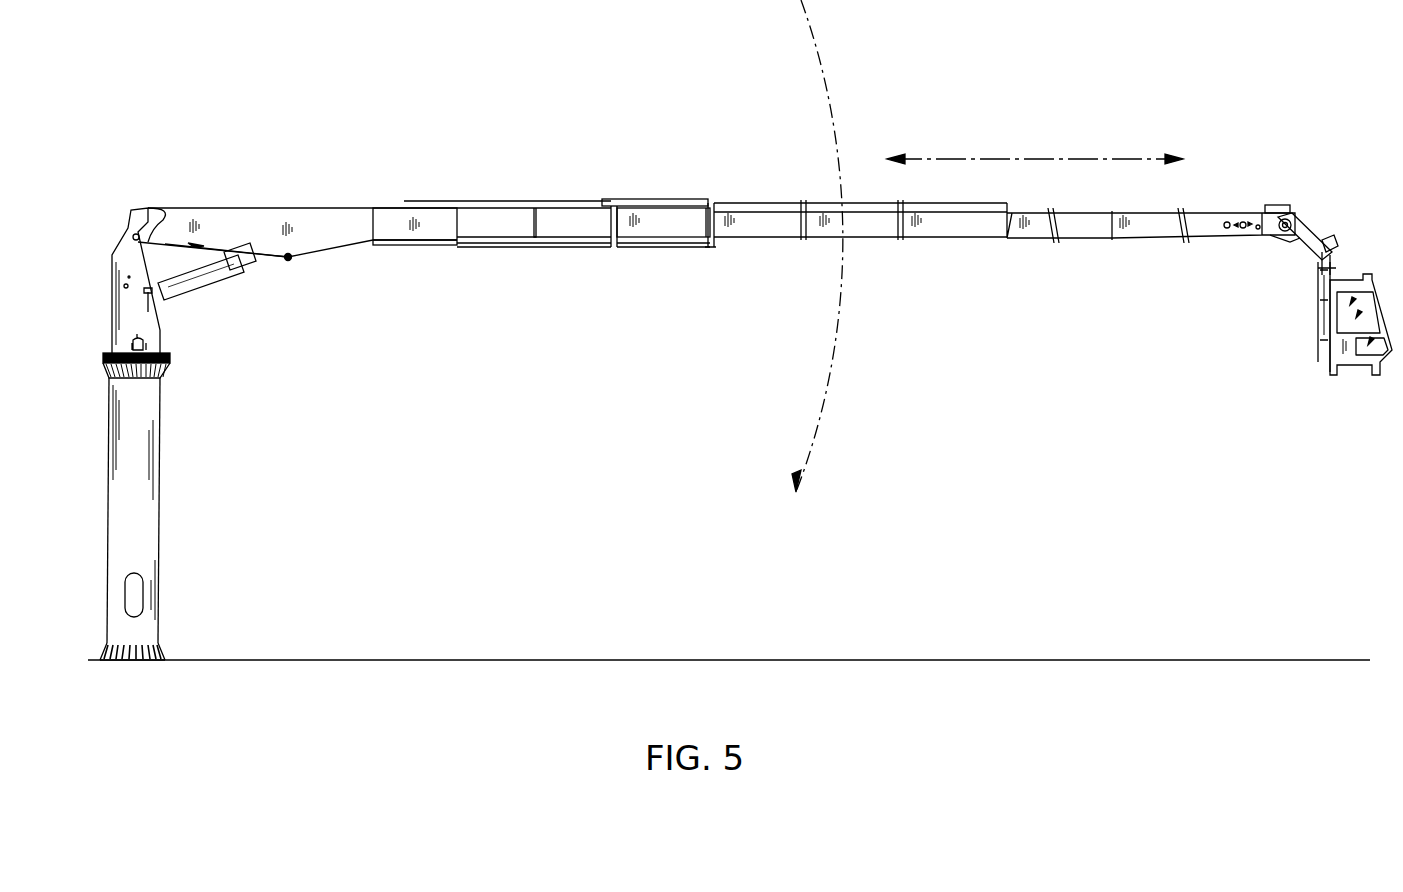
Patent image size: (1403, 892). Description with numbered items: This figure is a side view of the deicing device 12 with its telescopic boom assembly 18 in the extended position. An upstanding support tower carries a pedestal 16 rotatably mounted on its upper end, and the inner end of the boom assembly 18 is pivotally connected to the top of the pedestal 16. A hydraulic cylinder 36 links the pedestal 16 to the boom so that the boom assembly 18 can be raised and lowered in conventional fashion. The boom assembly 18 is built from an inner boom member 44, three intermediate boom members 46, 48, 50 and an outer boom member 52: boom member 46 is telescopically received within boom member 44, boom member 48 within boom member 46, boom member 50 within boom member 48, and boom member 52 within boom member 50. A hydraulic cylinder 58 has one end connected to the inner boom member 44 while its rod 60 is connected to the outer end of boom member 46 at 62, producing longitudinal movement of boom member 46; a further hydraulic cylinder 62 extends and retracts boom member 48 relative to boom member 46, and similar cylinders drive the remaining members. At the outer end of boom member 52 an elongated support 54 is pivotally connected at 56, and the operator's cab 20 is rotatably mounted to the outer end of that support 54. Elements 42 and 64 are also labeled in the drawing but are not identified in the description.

The deicing device 12 is at (150, 455).
The pedestal 16 is at (168, 319).
The telescopic boom assembly 18 is at (693, 174).
The operator's cab 20 is at (1320, 383).
The hydraulic cylinder 36 is at (243, 283).
The rotation bearing 42 is at (172, 356).
The inner boom member 44 is at (330, 218).
The intermediate boom member 46 is at (678, 222).
The intermediate boom member 48 is at (777, 230).
The intermediate boom member 50 is at (1070, 238).
The outer boom member 52 is at (1155, 240).
The elongated support 54 is at (1305, 248).
The pivotal connection 56 is at (1295, 210).
The hydraulic cylinder 58 is at (405, 250).
The rod 60 is at (562, 247).
The hydraulic cylinder 62 is at (718, 248).
The wear pad 64 is at (648, 197).